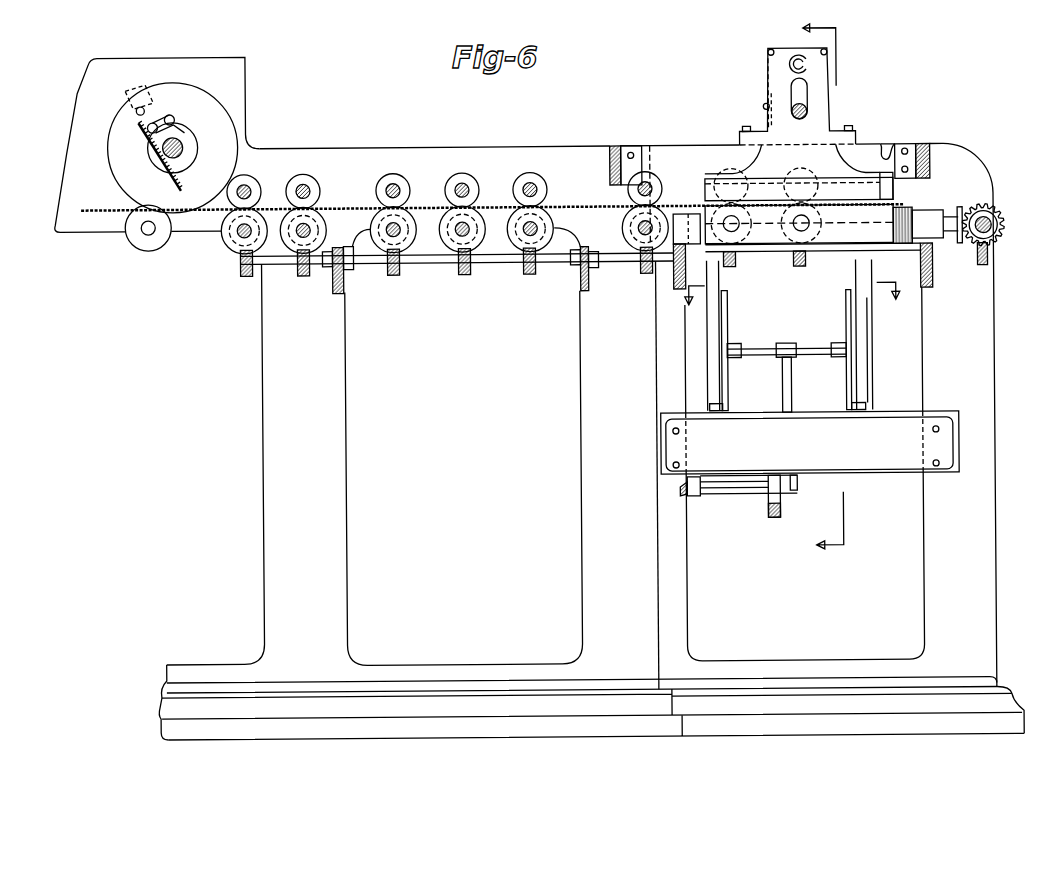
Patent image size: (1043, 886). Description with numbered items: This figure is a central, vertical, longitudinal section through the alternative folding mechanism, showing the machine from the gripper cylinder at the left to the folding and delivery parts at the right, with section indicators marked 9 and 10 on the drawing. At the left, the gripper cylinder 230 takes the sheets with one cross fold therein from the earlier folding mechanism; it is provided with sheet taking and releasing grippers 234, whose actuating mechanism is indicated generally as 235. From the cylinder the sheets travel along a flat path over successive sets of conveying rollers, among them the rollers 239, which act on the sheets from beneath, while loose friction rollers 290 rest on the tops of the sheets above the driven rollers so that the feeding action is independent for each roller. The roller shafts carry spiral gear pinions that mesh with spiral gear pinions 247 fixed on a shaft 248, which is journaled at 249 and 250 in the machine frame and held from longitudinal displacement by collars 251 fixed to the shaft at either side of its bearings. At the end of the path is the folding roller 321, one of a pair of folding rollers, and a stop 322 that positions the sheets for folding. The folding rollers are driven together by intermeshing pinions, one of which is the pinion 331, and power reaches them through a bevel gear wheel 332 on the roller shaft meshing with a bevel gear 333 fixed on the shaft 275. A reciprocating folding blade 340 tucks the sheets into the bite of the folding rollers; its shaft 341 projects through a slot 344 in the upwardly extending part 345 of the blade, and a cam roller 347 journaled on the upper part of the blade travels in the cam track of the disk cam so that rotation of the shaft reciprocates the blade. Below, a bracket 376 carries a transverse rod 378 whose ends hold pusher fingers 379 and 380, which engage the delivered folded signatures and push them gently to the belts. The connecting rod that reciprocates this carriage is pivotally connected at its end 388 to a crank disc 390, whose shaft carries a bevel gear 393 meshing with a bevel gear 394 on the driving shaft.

The gripper cylinder 230 is at (222, 112).
The sheet taking and releasing grippers 234 is at (148, 87).
The gripper actuating mechanism 235 is at (189, 127).
The loose friction rollers 290 is at (306, 182).
The conveying rollers 239 is at (408, 257).
The spiral gear pinions 247 is at (466, 268).
The shaft 248 is at (372, 264).
The journal bearing 249 is at (330, 268).
The journal bearing 250 is at (591, 270).
The collars 251 is at (349, 268).
The reciprocating folding blade 340 is at (818, 133).
The shaft 341 is at (808, 115).
The slot 344 is at (792, 96).
The upwardly extending part of the folding blade 345 is at (768, 122).
The cam roller 347 is at (789, 66).
The stop 322 is at (887, 150).
The folding roller 321 is at (851, 248).
The pinion 331 is at (921, 260).
The bevel gear wheel 332 is at (960, 212).
The bevel gear 333 is at (966, 222).
The shaft 275 is at (977, 240).
The pusher finger 380 is at (730, 300).
The pusher finger 379 is at (848, 403).
The rod 378 is at (812, 348).
The bracket 376 is at (783, 385).
The connecting rod end 388 is at (786, 476).
The crank disc 390 is at (781, 504).
The bevel gear 393 is at (705, 494).
The bevel gear 394 is at (692, 500).
The section line 9- 9 is at (813, 288).
The section line 10- 10 is at (795, 305).